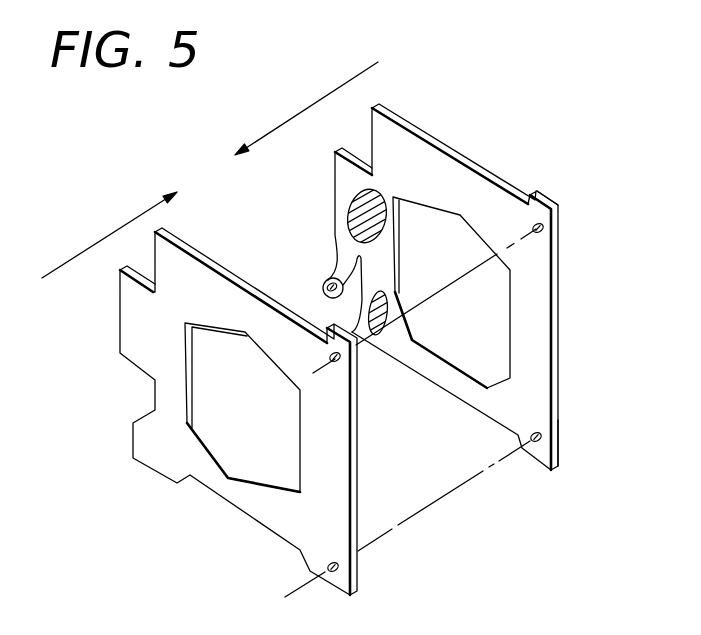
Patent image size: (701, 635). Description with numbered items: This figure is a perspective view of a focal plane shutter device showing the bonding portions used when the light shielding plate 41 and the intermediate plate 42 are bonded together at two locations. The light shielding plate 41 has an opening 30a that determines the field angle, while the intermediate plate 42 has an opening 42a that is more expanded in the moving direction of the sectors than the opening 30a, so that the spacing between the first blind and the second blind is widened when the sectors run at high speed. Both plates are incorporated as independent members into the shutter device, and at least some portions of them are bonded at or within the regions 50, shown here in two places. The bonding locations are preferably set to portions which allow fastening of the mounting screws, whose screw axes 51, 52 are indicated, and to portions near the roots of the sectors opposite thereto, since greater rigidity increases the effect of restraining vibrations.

The opening 30a is at (240, 452).
The light shielding plate 41 is at (277, 515).
The intermediate plate 42 is at (533, 340).
The opening 42a is at (453, 338).
The regions 50 is at (382, 218).
The screw axis 51 is at (563, 420).
The screw axis 52 is at (560, 215).